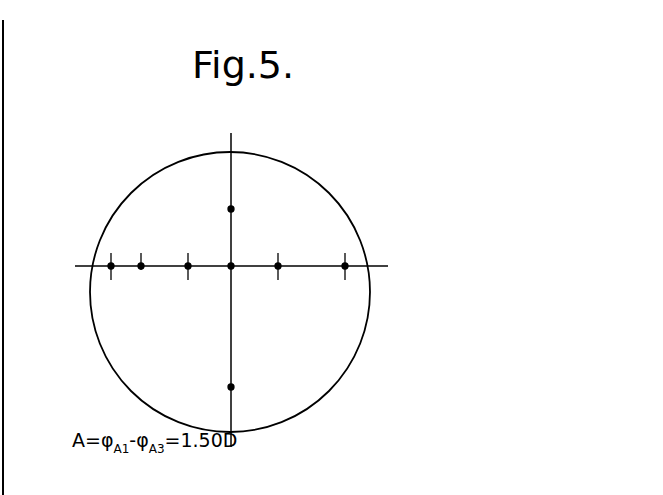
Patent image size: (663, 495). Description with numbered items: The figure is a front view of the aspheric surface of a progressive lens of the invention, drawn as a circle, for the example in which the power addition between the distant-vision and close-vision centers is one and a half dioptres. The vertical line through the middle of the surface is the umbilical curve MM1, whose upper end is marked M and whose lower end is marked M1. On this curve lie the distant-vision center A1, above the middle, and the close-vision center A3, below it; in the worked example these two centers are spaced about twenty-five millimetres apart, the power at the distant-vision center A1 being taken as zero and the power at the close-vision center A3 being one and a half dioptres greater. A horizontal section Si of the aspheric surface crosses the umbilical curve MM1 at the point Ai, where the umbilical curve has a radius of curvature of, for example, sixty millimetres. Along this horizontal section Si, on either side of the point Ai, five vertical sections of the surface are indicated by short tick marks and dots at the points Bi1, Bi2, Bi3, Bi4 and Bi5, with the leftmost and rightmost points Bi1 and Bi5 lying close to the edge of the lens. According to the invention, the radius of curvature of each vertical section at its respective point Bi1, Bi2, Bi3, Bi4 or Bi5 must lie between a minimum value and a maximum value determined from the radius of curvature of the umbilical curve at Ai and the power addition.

The umbilical curve end point M is at (229, 188).
The umbilical curve end point M1 is at (240, 371).
The intersection point Ai is at (239, 256).
The horizontal section Si is at (101, 264).
The point on vertical section Bi1 is at (110, 267).
The point on vertical section Bi2 is at (141, 269).
The point on vertical section Bi3 is at (189, 263).
The point on vertical section Bi4 is at (280, 264).
The point on vertical section Bi5 is at (343, 270).
The distant-vision center A1 is at (248, 200).
The close-vision center A3 is at (242, 374).